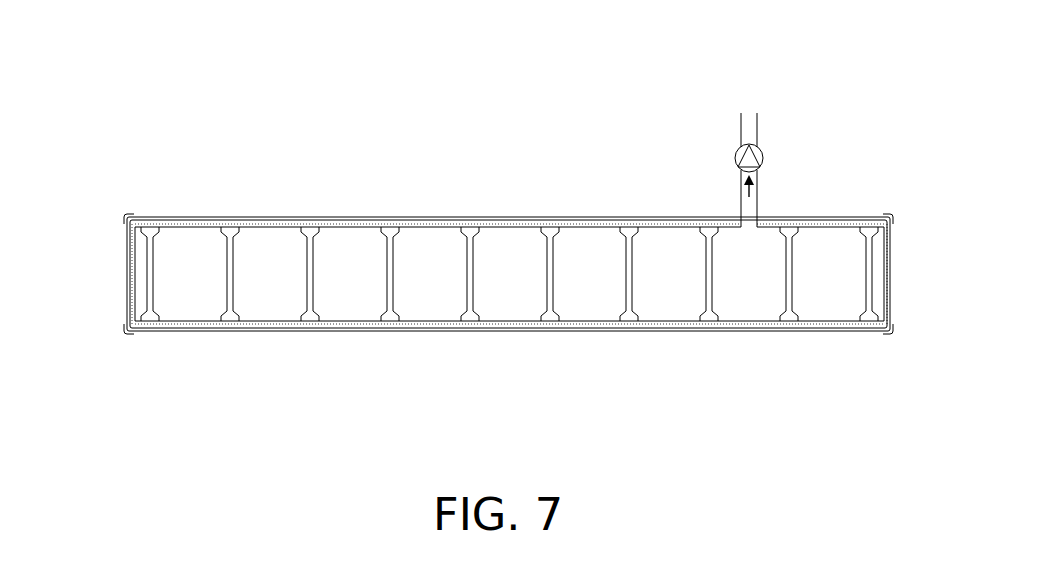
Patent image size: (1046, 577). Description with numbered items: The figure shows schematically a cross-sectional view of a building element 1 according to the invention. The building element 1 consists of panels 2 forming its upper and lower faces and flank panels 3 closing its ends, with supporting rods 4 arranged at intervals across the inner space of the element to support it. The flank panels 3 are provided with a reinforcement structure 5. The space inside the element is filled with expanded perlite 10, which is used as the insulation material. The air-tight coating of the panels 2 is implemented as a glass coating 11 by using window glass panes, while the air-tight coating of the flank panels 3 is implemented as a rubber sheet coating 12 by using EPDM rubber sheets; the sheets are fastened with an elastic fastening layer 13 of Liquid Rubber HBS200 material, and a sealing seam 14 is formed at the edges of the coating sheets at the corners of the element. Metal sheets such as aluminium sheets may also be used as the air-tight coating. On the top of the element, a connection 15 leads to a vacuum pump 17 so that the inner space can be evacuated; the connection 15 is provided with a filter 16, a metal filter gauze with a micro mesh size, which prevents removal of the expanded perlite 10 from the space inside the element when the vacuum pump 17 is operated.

The building element 1 is at (248, 113).
The panels 2 is at (577, 226).
The flank panels 3 is at (126, 310).
The supporting rods 4 is at (233, 260).
The reinforcement structure 5 is at (130, 263).
The expanded perlite 10 is at (276, 285).
The glass coating 11 is at (533, 218).
The rubber sheet coating 12 is at (128, 285).
The elastic fastening layer 13 is at (510, 218).
The sealing seam 14 is at (127, 332).
The connection to a vacuum pump 15 is at (741, 210).
The filter 16 is at (758, 200).
The vacuum pump 17 is at (757, 150).